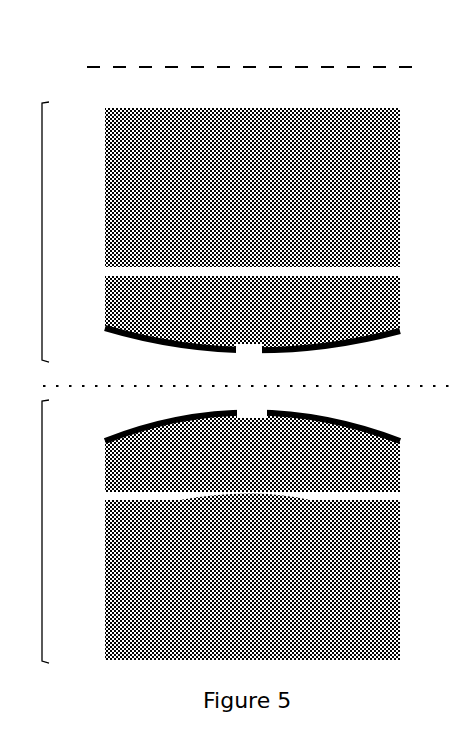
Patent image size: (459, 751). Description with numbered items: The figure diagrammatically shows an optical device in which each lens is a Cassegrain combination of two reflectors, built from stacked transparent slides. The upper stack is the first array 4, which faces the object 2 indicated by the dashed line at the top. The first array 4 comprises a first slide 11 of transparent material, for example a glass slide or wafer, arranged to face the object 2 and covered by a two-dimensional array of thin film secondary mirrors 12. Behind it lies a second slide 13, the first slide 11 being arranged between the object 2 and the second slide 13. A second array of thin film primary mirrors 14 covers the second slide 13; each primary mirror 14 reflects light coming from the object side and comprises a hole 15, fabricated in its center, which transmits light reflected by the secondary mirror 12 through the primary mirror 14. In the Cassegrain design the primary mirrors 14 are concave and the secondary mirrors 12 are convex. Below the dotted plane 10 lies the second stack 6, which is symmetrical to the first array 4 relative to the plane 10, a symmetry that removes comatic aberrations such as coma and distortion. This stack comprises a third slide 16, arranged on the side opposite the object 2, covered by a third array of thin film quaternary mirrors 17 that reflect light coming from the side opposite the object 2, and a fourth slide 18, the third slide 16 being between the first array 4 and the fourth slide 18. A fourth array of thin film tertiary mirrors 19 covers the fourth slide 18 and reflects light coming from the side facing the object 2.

The object 2 is at (188, 64).
The first array 4 is at (40, 232).
The second layer stack 6 is at (40, 530).
The plane 10 is at (402, 385).
The first slide 11 is at (122, 181).
The secondary mirror 12 is at (265, 272).
The second slide 13 is at (131, 297).
The primary mirror 14 is at (149, 341).
The hole 15 is at (267, 354).
The third slide 16 is at (133, 468).
The quaternary mirror 17 is at (176, 420).
The fourth slide 18 is at (133, 597).
The tertiary mirror 19 is at (307, 501).